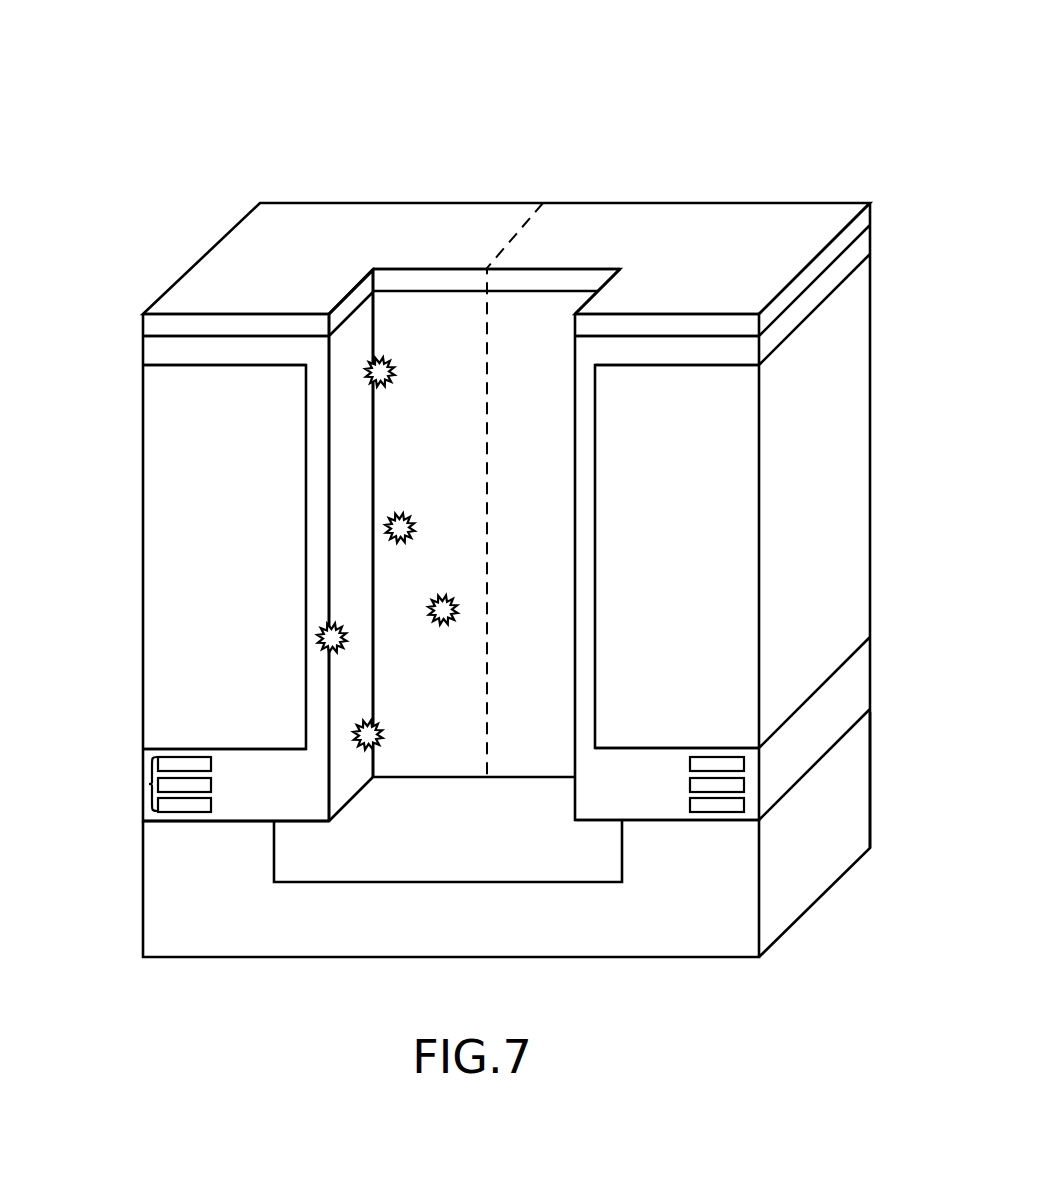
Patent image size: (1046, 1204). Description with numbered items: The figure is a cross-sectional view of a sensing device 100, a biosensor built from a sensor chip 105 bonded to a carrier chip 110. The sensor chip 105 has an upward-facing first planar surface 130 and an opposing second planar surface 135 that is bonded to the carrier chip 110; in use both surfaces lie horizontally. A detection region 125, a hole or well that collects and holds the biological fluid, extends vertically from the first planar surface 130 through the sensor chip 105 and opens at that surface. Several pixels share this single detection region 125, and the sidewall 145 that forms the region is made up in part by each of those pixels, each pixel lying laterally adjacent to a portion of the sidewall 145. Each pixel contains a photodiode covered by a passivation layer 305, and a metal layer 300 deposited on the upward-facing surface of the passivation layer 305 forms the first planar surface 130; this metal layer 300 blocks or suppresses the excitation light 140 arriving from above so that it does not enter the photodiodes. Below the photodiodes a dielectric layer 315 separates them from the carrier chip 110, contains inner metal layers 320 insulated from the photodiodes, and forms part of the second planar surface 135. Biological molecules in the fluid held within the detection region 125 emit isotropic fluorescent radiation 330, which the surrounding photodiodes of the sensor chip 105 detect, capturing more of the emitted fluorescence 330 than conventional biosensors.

The sensing device 100 is at (142, 130).
The sensor chip 105 is at (884, 203).
The carrier chip 110 is at (893, 703).
The detection region 125 is at (449, 322).
The first planar surface 130 is at (280, 212).
The second planar surface 135 is at (162, 840).
The excitation light 140 is at (544, 60).
The sidewall 145 is at (355, 427).
The metal layer 300 is at (165, 320).
The passivation layer 305 is at (165, 349).
The dielectric layer 315 is at (241, 800).
The inner metal layers 320 is at (150, 784).
The fluorescent radiation 330 is at (399, 516).